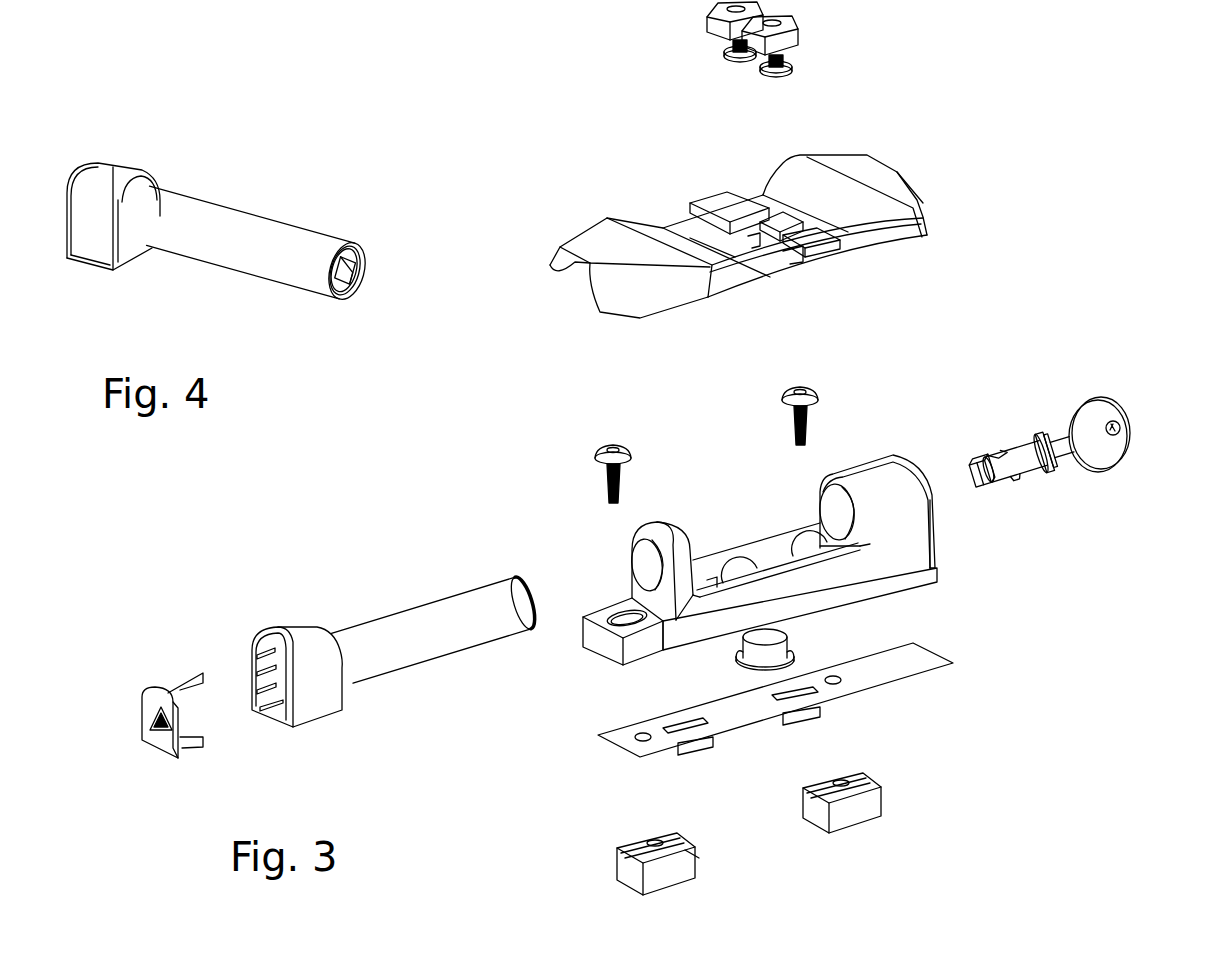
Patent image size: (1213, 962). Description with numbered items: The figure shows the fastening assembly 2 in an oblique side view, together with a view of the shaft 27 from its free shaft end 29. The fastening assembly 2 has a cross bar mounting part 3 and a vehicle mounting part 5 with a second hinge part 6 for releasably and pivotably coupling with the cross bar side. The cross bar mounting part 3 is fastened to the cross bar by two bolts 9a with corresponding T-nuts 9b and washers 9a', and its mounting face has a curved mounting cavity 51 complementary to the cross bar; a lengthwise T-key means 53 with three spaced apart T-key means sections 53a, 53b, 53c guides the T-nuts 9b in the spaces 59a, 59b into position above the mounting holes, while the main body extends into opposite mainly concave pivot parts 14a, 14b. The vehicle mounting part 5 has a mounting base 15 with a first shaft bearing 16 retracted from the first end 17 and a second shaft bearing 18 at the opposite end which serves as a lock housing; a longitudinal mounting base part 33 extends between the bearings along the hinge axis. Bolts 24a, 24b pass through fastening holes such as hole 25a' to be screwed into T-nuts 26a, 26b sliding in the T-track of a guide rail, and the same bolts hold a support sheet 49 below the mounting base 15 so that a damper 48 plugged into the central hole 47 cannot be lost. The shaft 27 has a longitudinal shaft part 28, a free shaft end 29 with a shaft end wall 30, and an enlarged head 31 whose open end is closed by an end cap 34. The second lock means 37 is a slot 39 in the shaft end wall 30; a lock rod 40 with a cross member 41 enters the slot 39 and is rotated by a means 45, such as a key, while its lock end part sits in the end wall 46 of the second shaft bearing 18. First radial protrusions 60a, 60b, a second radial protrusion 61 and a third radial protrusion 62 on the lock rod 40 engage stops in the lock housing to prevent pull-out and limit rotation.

In FIG. 3, the fastening assembly 2 is at (1068, 762).
In FIG. 3, the cross bar mounting part 3 is at (770, 219).
In FIG. 3, the vehicle mounting part 5 is at (890, 565).
In FIG. 3, the second hinge part 6 is at (905, 545).
In FIG. 3, the bolt 9a is at (784, 89).
In FIG. 3, the washer 9a' is at (781, 83).
In FIG. 3, the T-nut 9b is at (800, 35).
In FIG. 3, the pivot part 14a is at (565, 272).
In FIG. 3, the pivot part 14b is at (920, 236).
In FIG. 3, the mounting base 15 is at (782, 571).
In FIG. 3, the first shaft bearing 16 is at (664, 533).
In FIG. 3, the first end 17 is at (611, 638).
In FIG. 3, the second shaft bearing 18 is at (880, 478).
In FIG. 3, the bolt 24a is at (600, 490).
In FIG. 3, the bolt 24b is at (815, 418).
In FIG. 3, the fastening hole 25a' is at (613, 590).
In FIG. 3, the T-nut 26a is at (630, 868).
In FIG. 3, the T-nut 26b is at (865, 805).
In FIG. 4, the shaft 27 is at (252, 231).
In FIG. 3, the shaft 27 is at (414, 670).
In FIG. 4, the longitudinal shaft part 28 is at (277, 238).
In FIG. 3, the longitudinal shaft part 28 is at (437, 602).
In FIG. 4, the free shaft end 29 is at (345, 221).
In FIG. 3, the shaft end wall 30 is at (538, 584).
In FIG. 4, the enlarged head 31 is at (92, 187).
In FIG. 3, the enlarged head 31 is at (315, 712).
In FIG. 3, the longitudinal mounting base part 33 is at (770, 548).
In FIG. 3, the end cap 34 is at (148, 688).
In FIG. 4, the second lock means 37 is at (311, 303).
In FIG. 4, the slot 39 is at (360, 320).
In FIG. 3, the lock rod 40 is at (1049, 446).
In FIG. 3, the cross member 41 is at (962, 444).
In FIG. 3, the means to rotate the lock rod 45 is at (1100, 414).
In FIG. 3, the end wall 46 is at (935, 512).
In FIG. 3, the central hole 47 is at (738, 570).
In FIG. 3, the damper 48 is at (780, 633).
In FIG. 3, the support sheet 49 is at (930, 672).
In FIG. 3, the curved mounting cavity 51 is at (683, 230).
In FIG. 3, the T-key means 53 is at (757, 203).
In FIG. 3, the T-key means section 53a is at (740, 195).
In FIG. 3, the T-key means section 53b is at (788, 212).
In FIG. 3, the T-key means section 53c is at (822, 230).
In FIG. 3, the space 59a is at (752, 247).
In FIG. 3, the space 59b is at (795, 263).
In FIG. 3, the first radial protrusion 60a is at (1021, 507).
In FIG. 3, the first radial protrusion 60b is at (987, 424).
In FIG. 3, the second radial protrusion 61 is at (1062, 481).
In FIG. 3, the third radial protrusion 62 is at (1050, 413).